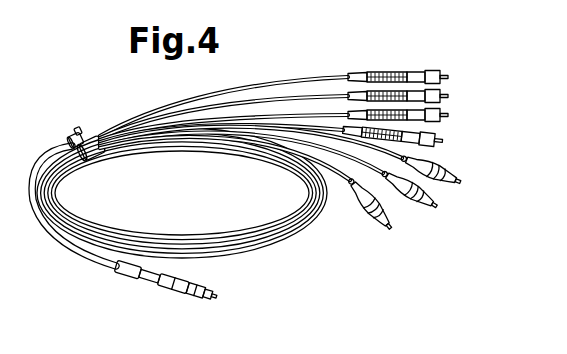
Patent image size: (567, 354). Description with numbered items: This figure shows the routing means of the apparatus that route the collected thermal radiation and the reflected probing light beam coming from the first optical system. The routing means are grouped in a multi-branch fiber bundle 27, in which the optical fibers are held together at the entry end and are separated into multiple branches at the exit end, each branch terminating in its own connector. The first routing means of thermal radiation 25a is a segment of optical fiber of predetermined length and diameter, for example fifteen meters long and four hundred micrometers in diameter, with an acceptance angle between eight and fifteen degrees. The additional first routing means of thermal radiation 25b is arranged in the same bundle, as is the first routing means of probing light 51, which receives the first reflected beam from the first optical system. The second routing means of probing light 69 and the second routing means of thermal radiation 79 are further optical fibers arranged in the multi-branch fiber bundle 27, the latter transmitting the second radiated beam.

The multi-branch fiber bundle 27 is at (77, 133).
The first routing means of thermal radiation 25a is at (328, 75).
The additional first routing means of thermal radiation 25b is at (449, 117).
The first routing means of probing light 51 is at (449, 96).
The second routing means of probing light 69 is at (463, 183).
The second routing means of thermal radiation 79 is at (438, 207).